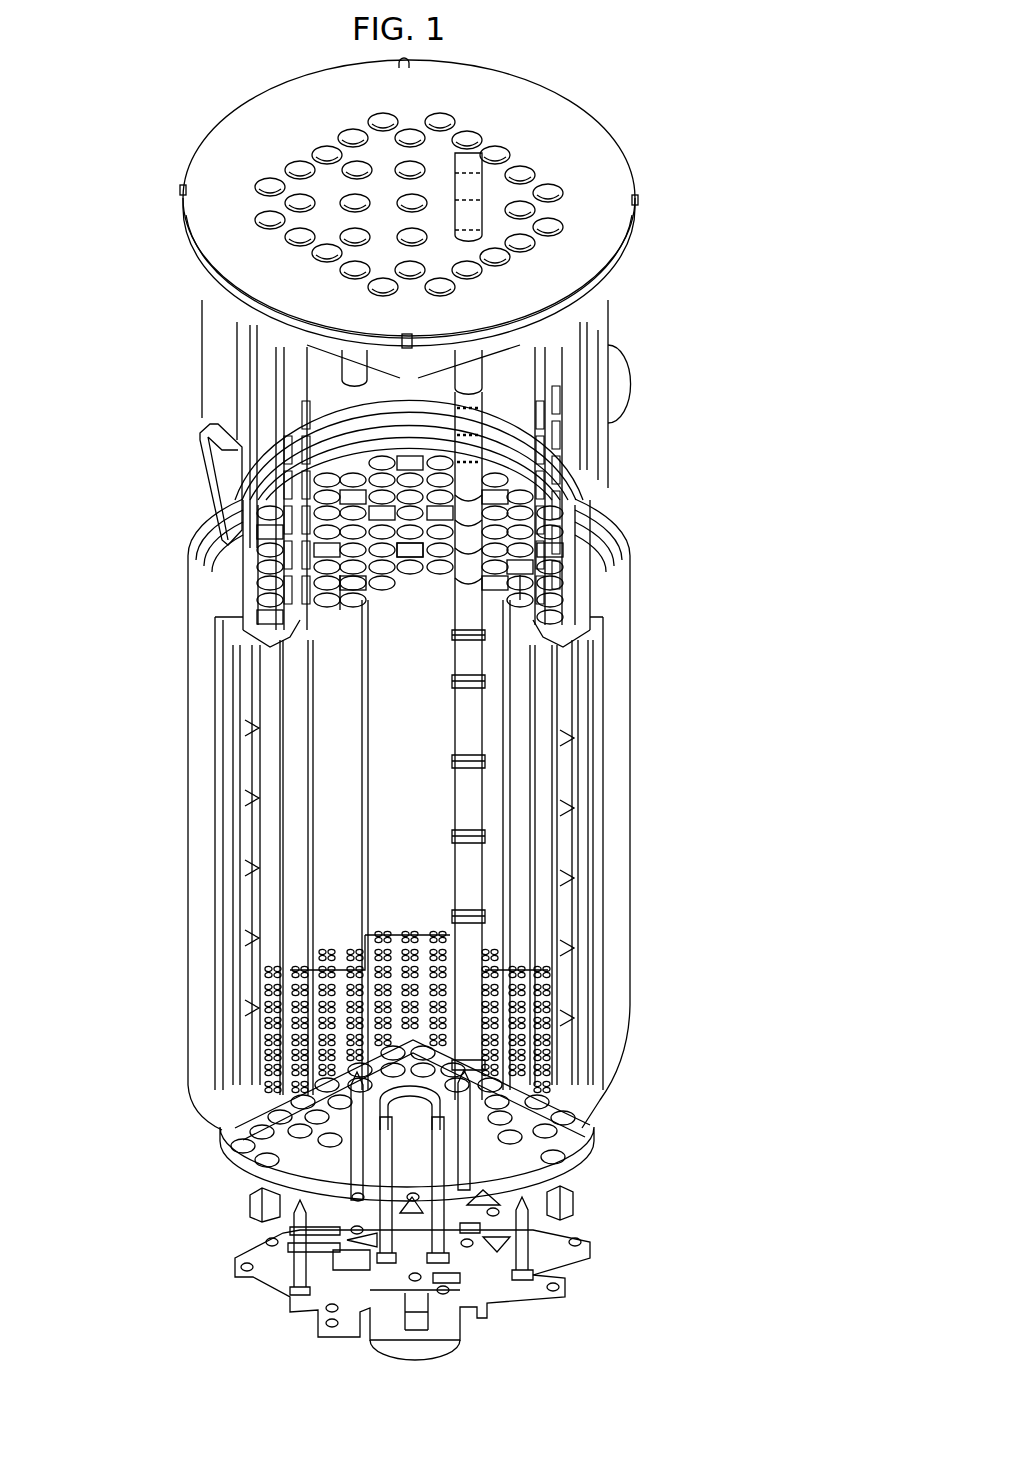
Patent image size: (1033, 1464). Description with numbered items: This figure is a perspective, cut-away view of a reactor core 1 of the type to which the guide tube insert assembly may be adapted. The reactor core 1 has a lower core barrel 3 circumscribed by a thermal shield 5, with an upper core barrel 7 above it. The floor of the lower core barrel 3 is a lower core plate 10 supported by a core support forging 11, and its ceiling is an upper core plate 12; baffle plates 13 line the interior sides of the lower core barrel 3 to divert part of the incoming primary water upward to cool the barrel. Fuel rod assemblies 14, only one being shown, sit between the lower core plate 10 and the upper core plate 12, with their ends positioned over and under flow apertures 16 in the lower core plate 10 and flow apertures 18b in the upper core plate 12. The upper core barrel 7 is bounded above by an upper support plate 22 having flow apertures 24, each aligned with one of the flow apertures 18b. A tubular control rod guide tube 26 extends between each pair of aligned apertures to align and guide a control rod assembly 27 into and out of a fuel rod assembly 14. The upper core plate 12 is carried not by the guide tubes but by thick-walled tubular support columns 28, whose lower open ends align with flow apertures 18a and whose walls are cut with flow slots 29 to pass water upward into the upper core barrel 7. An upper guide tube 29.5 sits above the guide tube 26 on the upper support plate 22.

The reactor core 1 is at (162, 240).
The lower core barrel 3 is at (728, 557).
The thermal shield 5 is at (619, 842).
The upper core barrel 7 is at (639, 557).
The lower core plate 10 is at (550, 1100).
The core support forging 11 is at (595, 1160).
The upper core plate 12 is at (560, 628).
The baffle plates 13 is at (418, 750).
The fuel rod assemblies 14 is at (455, 838).
The flow apertures 16 is at (540, 1020).
The flow apertures 18a is at (355, 588).
The flow apertures 18b is at (412, 556).
The upper support plate 22 is at (604, 180).
The flow apertures 24 is at (548, 198).
The control rod guide tube 26 is at (463, 427).
The control rod assembly 27 is at (520, 493).
The support columns 28 is at (553, 355).
The flow slots 29 is at (265, 500).
The upper guide tube 29.5 is at (473, 195).